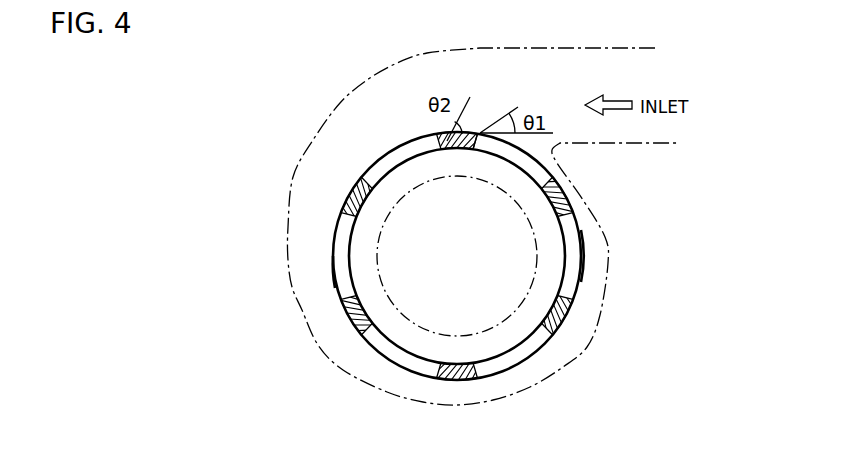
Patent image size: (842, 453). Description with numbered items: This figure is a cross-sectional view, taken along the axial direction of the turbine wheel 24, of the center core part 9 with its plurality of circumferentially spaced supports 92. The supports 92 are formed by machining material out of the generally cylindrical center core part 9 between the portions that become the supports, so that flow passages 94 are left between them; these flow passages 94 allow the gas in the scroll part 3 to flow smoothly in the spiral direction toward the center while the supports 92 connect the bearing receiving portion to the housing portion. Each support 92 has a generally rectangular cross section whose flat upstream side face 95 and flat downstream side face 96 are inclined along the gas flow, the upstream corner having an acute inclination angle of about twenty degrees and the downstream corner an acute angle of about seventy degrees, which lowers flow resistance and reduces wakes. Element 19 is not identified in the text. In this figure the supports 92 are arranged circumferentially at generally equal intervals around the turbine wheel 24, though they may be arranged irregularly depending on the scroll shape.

The scroll part 3 is at (368, 83).
The center core part 9 is at (587, 265).
The ring 19 is at (335, 288).
The turbine wheel 24 is at (503, 323).
The support 92 is at (352, 192).
The flow passage 94 is at (377, 162).
The upstream side face 95 is at (478, 152).
The downstream side face 96 is at (438, 146).